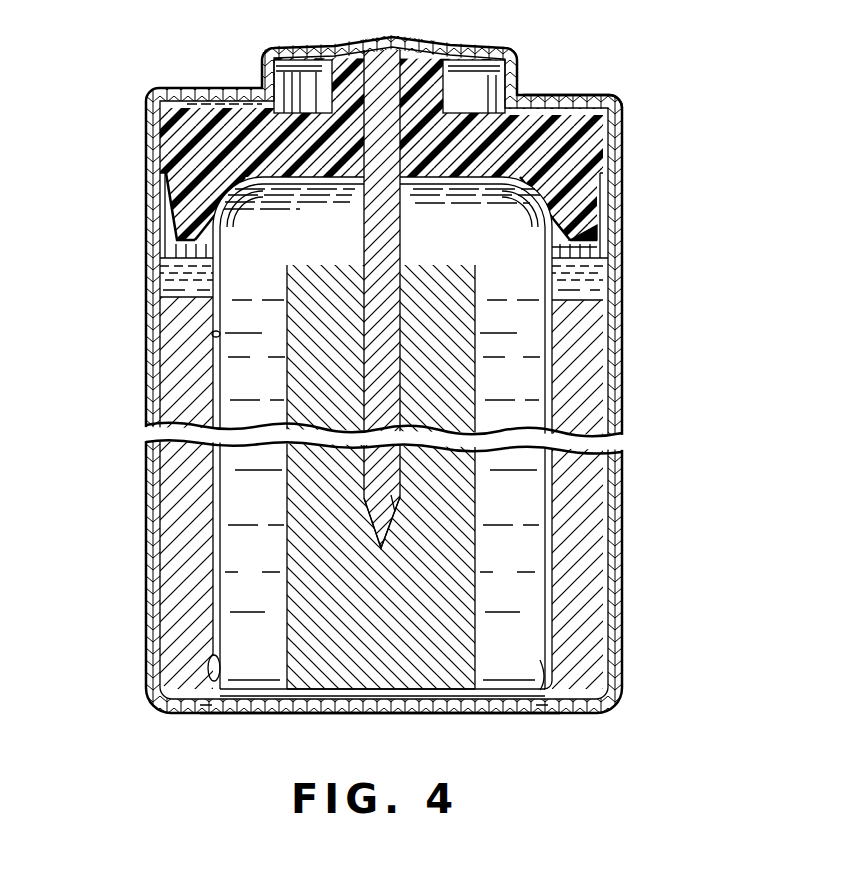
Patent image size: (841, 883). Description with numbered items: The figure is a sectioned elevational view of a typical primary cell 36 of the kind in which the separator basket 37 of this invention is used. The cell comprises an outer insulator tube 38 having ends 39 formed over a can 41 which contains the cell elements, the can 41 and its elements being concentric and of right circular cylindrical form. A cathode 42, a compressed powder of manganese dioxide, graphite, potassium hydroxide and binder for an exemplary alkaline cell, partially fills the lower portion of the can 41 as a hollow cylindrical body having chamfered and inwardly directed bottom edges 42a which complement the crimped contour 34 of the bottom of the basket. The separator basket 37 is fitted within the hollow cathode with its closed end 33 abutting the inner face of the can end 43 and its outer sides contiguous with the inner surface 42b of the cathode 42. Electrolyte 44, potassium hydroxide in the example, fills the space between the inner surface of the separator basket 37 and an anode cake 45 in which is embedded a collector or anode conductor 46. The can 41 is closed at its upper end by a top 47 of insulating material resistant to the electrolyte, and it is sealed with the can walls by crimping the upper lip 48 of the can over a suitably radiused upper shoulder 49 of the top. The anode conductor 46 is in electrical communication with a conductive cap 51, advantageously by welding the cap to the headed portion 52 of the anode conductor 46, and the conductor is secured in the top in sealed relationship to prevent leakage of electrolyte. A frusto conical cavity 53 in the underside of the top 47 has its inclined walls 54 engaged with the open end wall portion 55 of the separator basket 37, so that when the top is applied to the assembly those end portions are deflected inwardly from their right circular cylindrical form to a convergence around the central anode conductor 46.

The closed end 33 is at (440, 713).
The crimped contour 34 is at (207, 713).
The primary cell 36 is at (572, 64).
The separator basket 37 is at (548, 383).
The outer insulator tube 38 is at (152, 272).
The ends 39 is at (191, 88).
The can 41 is at (160, 154).
The cathode 42 is at (167, 522).
The bottom edges 42a is at (212, 657).
The inner surface 42b is at (212, 336).
The can end 43 is at (282, 700).
The electrolyte 44 is at (491, 334).
The anode cake 45 is at (387, 624).
The anode conductor 46 is at (399, 502).
The top 47 is at (590, 165).
The upper lip 48 is at (597, 96).
The upper shoulder 49 is at (602, 130).
The conductive cap 51 is at (302, 48).
The headed portion 52 is at (388, 62).
The frusto conical cavity 53 is at (588, 238).
The inclined walls 54 is at (578, 245).
The open end wall portion 55 is at (518, 192).